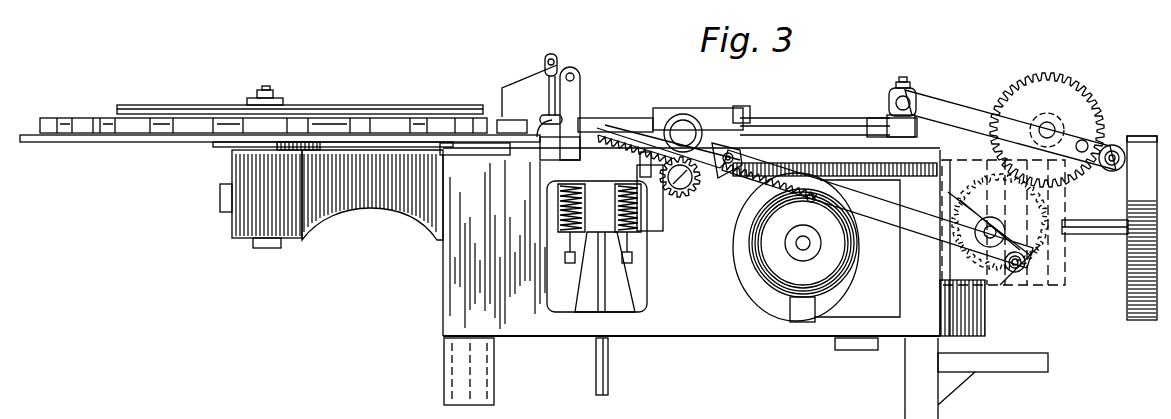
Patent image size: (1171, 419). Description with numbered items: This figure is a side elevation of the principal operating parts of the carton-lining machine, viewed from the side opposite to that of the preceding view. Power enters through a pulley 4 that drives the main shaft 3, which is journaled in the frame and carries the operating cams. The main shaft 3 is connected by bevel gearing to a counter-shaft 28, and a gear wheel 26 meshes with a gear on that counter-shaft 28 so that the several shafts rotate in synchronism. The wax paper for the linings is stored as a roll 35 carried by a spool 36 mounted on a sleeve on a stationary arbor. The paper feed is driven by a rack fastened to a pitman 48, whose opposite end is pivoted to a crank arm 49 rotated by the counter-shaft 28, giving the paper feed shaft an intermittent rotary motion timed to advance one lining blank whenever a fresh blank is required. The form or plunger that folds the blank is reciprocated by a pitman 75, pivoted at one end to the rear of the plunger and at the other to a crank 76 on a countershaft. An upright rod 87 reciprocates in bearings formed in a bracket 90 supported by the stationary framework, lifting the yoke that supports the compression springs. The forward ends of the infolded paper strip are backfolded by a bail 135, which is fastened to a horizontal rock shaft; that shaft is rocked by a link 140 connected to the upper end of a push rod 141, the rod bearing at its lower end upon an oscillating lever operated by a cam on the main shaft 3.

The main shaft 3 is at (1096, 234).
The pulley 4 is at (1140, 322).
The gear wheel 26 is at (1052, 74).
The counter-shaft 28 is at (1000, 222).
The roll 35 is at (803, 247).
The spool 36 is at (803, 247).
The pitman 48 is at (871, 212).
The crank arm 49 is at (1030, 268).
The pitman 75 is at (945, 108).
The crank 76 is at (1090, 140).
The rod 87 is at (596, 380).
The bracket 90 is at (585, 296).
The bail 135 is at (501, 96).
The link 140 is at (564, 72).
The push rod 141 is at (545, 64).